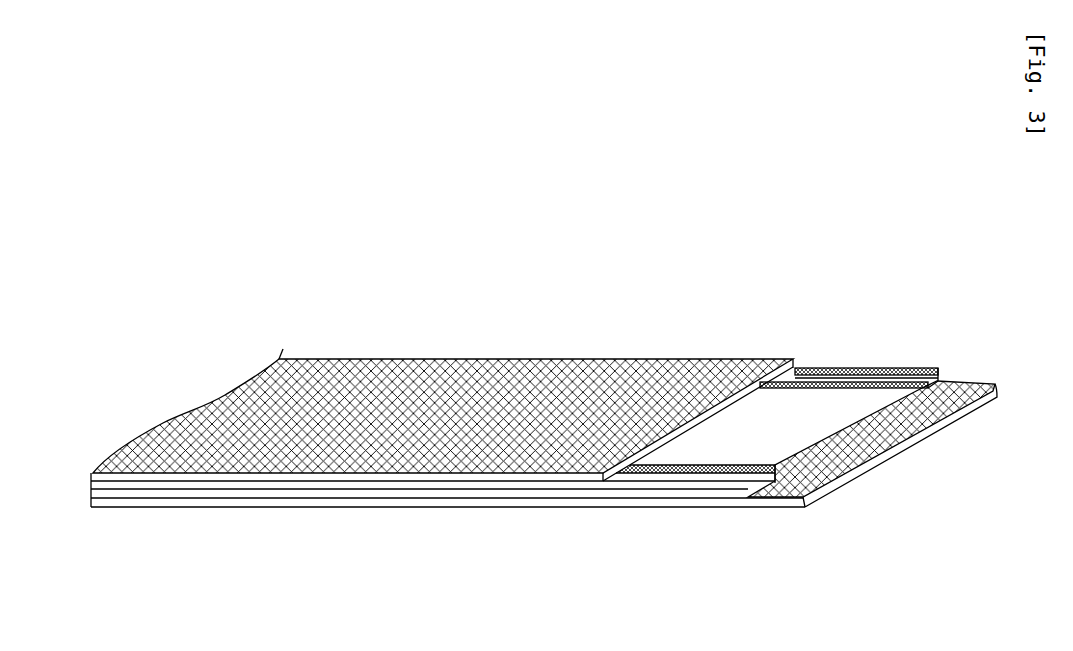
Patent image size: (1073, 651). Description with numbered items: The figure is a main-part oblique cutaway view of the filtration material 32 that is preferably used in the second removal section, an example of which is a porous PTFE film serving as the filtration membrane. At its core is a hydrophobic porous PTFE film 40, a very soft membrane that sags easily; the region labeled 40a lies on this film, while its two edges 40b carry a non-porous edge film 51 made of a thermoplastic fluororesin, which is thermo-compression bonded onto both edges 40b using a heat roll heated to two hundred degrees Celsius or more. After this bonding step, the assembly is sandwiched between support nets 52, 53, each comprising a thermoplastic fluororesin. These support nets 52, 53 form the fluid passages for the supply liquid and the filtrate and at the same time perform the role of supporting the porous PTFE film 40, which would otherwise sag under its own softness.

The filtration material 32 is at (544, 425).
The hydrophobic porous PTFE film 40 is at (805, 432).
The flat portion of frame 40a is at (824, 405).
The edges 40b is at (907, 382).
The non-porous edge film 51 is at (544, 476).
The support net 52 is at (582, 359).
The support net 53 is at (442, 508).